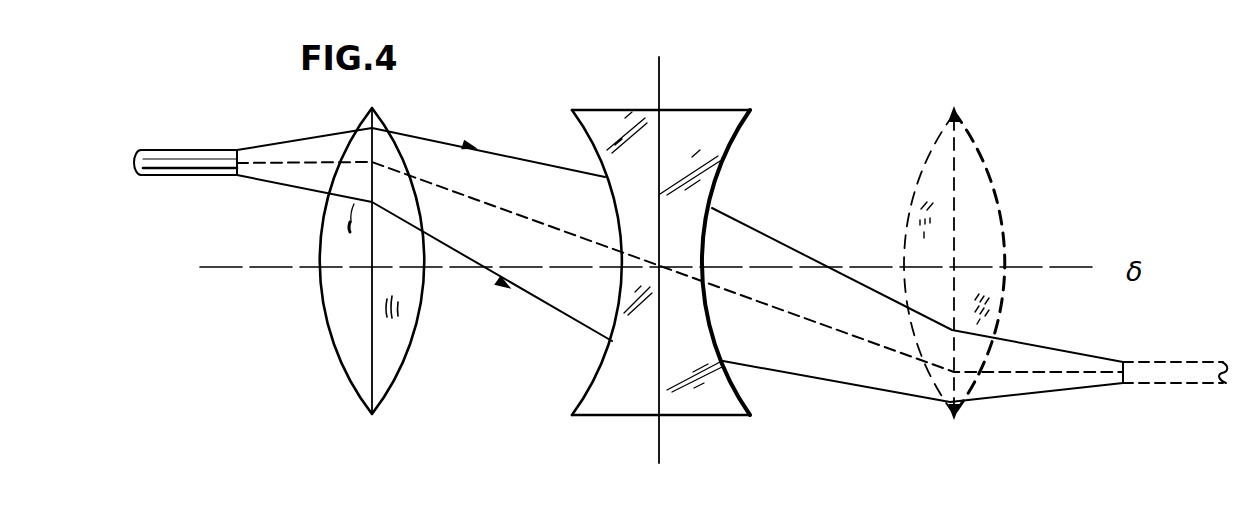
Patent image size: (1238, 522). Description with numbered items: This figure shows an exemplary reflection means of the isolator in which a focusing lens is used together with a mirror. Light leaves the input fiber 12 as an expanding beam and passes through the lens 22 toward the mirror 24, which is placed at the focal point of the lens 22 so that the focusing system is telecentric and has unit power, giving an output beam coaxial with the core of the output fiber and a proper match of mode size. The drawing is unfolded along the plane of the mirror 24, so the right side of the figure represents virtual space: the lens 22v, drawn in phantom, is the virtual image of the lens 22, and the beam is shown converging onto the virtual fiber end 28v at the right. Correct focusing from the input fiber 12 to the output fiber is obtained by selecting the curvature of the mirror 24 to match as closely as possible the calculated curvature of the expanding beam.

The input fiber 12 is at (183, 148).
The lens 22 is at (347, 375).
The mirror 24 is at (603, 416).
The virtual image of lens 22v is at (982, 175).
The virtual image of fiber end 28v is at (1203, 385).